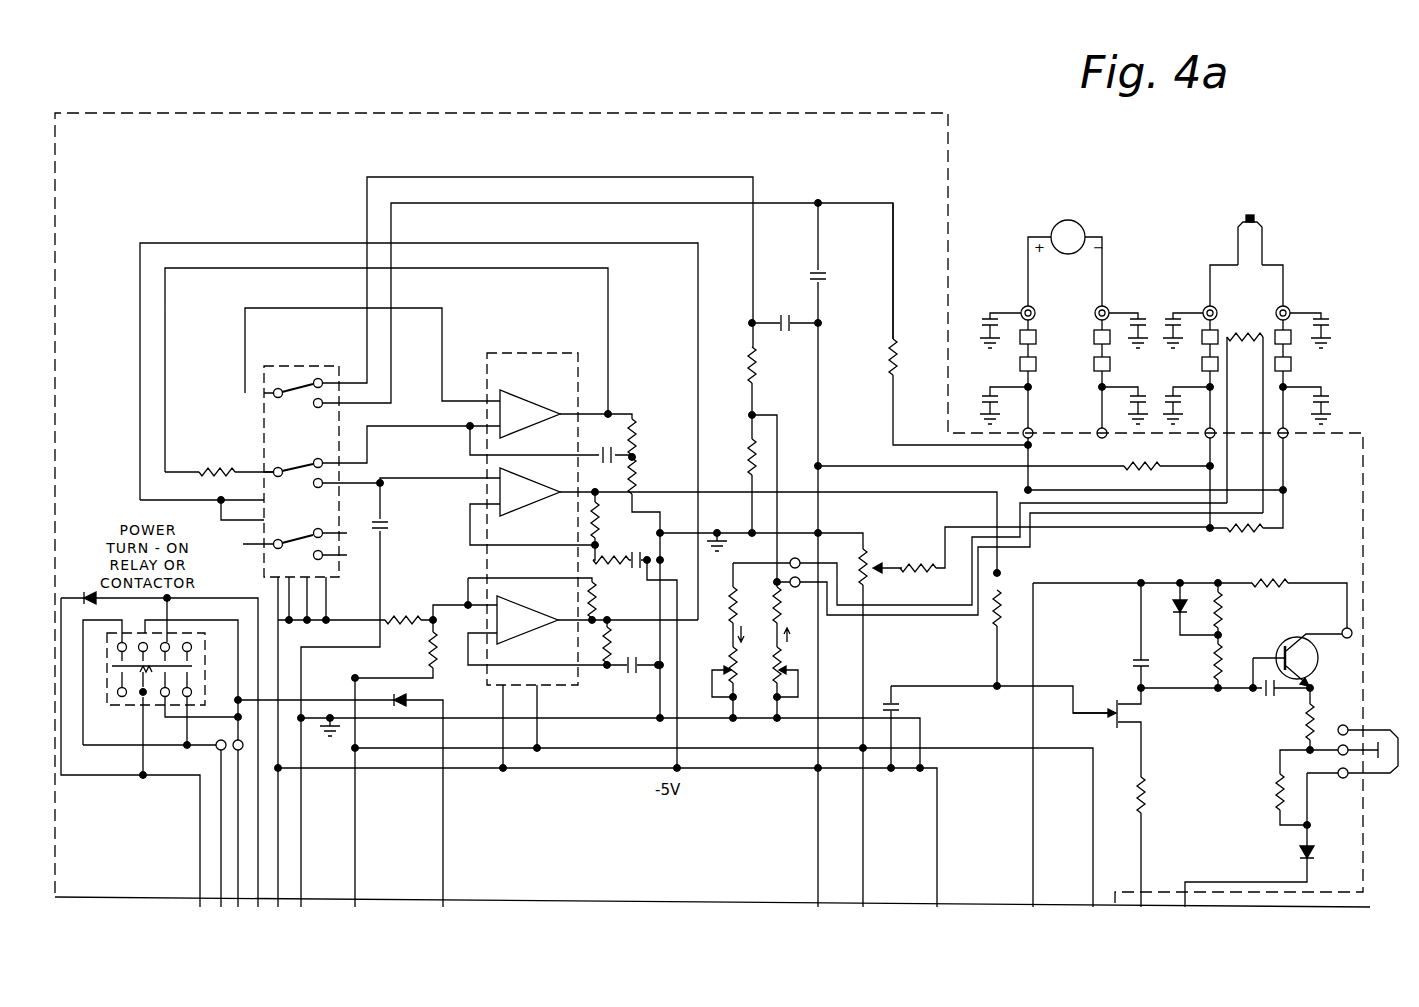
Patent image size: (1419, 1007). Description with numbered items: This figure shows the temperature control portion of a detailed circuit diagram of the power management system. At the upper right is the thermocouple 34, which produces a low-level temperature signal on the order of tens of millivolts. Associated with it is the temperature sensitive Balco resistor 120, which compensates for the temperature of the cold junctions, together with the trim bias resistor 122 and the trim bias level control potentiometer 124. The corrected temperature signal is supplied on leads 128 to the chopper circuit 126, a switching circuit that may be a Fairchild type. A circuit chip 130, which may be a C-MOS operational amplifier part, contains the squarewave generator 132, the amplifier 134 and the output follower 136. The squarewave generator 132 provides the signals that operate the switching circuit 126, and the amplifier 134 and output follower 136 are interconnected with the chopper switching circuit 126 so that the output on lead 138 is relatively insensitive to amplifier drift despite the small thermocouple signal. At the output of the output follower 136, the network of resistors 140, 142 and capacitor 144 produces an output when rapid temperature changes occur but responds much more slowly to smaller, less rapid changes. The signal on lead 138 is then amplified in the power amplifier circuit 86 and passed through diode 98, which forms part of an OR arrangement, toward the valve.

The thermocouple 34 is at (1251, 214).
The power amplifier circuit 86 is at (1141, 632).
The diode 98 is at (1298, 852).
The temperature sensitive Balco resistor 120 is at (1248, 335).
The trim bias resistor 122 is at (1148, 478).
The trim bias level control potentiometer 124 is at (872, 573).
The chopper circuit 126 is at (262, 420).
The leads 128 is at (391, 226).
The circuit chip 130 is at (487, 558).
The squarewave generator 132 is at (520, 634).
The amplifier 134 is at (528, 395).
The output follower 136 is at (500, 478).
The lead 138 is at (674, 490).
The resistor 140 is at (592, 520).
The resistor 142 is at (600, 560).
The capacitor 144 is at (637, 568).